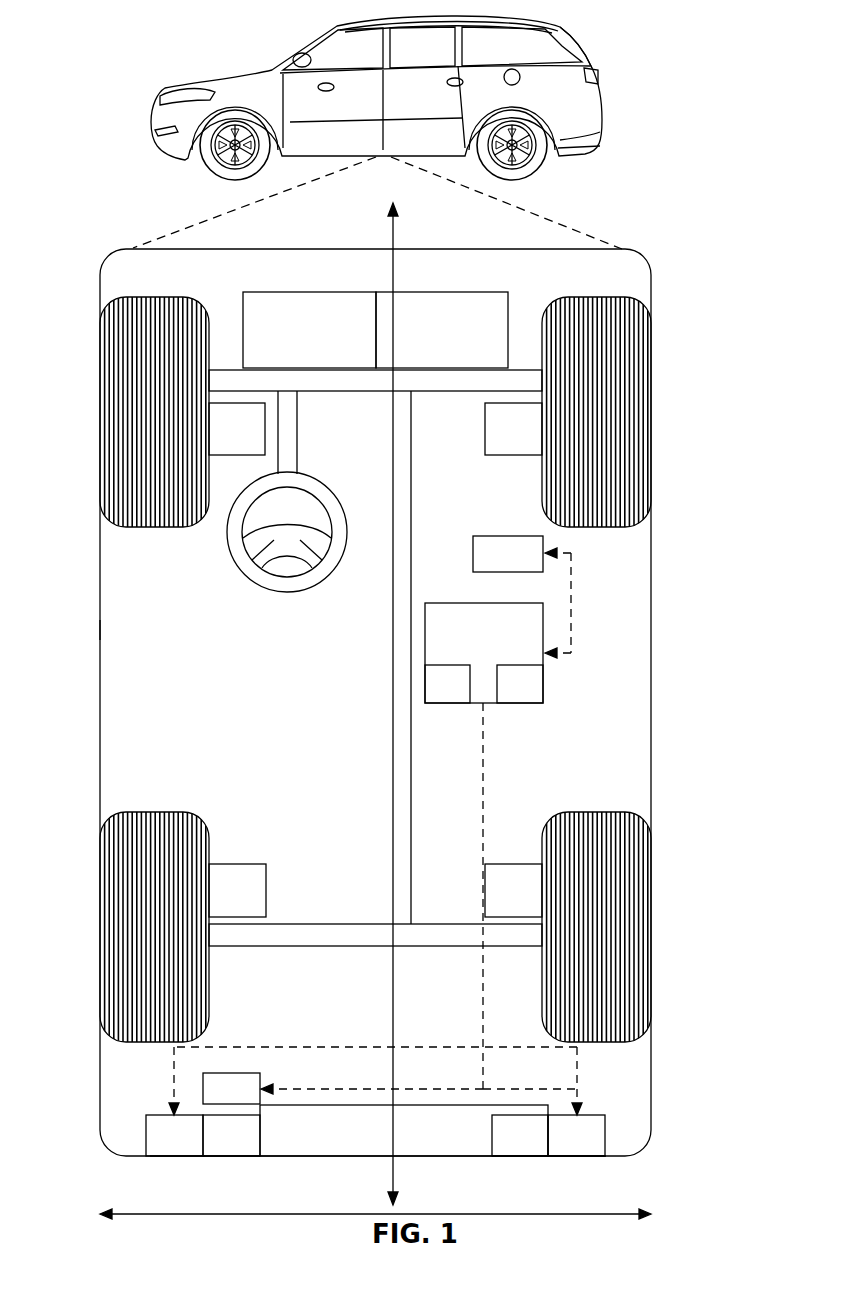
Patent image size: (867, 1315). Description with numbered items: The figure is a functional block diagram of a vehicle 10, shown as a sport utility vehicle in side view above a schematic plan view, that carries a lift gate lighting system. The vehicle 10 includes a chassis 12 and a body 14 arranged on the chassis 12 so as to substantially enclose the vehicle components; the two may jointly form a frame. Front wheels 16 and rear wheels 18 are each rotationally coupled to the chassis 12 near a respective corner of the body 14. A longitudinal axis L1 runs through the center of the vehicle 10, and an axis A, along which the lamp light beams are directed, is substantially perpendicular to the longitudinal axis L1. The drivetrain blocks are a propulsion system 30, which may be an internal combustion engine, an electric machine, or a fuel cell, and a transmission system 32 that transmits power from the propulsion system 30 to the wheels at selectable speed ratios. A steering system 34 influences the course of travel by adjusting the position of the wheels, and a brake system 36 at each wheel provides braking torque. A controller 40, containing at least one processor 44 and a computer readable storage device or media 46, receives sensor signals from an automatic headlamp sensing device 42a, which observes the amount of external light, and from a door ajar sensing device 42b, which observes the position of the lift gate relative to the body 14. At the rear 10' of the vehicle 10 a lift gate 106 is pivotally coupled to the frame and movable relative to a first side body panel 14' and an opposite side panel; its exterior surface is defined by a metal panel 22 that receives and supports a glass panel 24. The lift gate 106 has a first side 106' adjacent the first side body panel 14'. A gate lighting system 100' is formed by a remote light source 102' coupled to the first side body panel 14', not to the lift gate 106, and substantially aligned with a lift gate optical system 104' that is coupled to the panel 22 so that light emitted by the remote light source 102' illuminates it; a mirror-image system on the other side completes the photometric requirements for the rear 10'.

The vehicle 10 is at (349, 98).
The rear of the vehicle 10' is at (367, 718).
The chassis 12 is at (392, 727).
The body 14 is at (62, 621).
The first side body panel 14' is at (688, 700).
The front wheels 16 is at (148, 297).
The rear wheels 18 is at (160, 1042).
The panel 22 is at (600, 120).
The glass panel 24 is at (575, 47).
The propulsion system 30 is at (296, 342).
The transmission system 32 is at (429, 342).
The steering system 34 is at (301, 449).
The brake system 36 is at (224, 441).
The controller 40 is at (471, 646).
The automatic headlamp sensing device 42a is at (490, 567).
The door ajar sensing device 42b is at (214, 1101).
The processor 44 is at (434, 697).
The computer readable storage device or media 46 is at (507, 697).
The gate lighting system 100' is at (610, 1180).
The remote light source 102' is at (611, 612).
The lift gate optical system 104' is at (626, 598).
The lift gate 106 is at (490, 579).
The first side of the lift gate 106' is at (531, 1171).
The longitudinal axis L1 is at (394, 282).
The axis A is at (410, 1213).